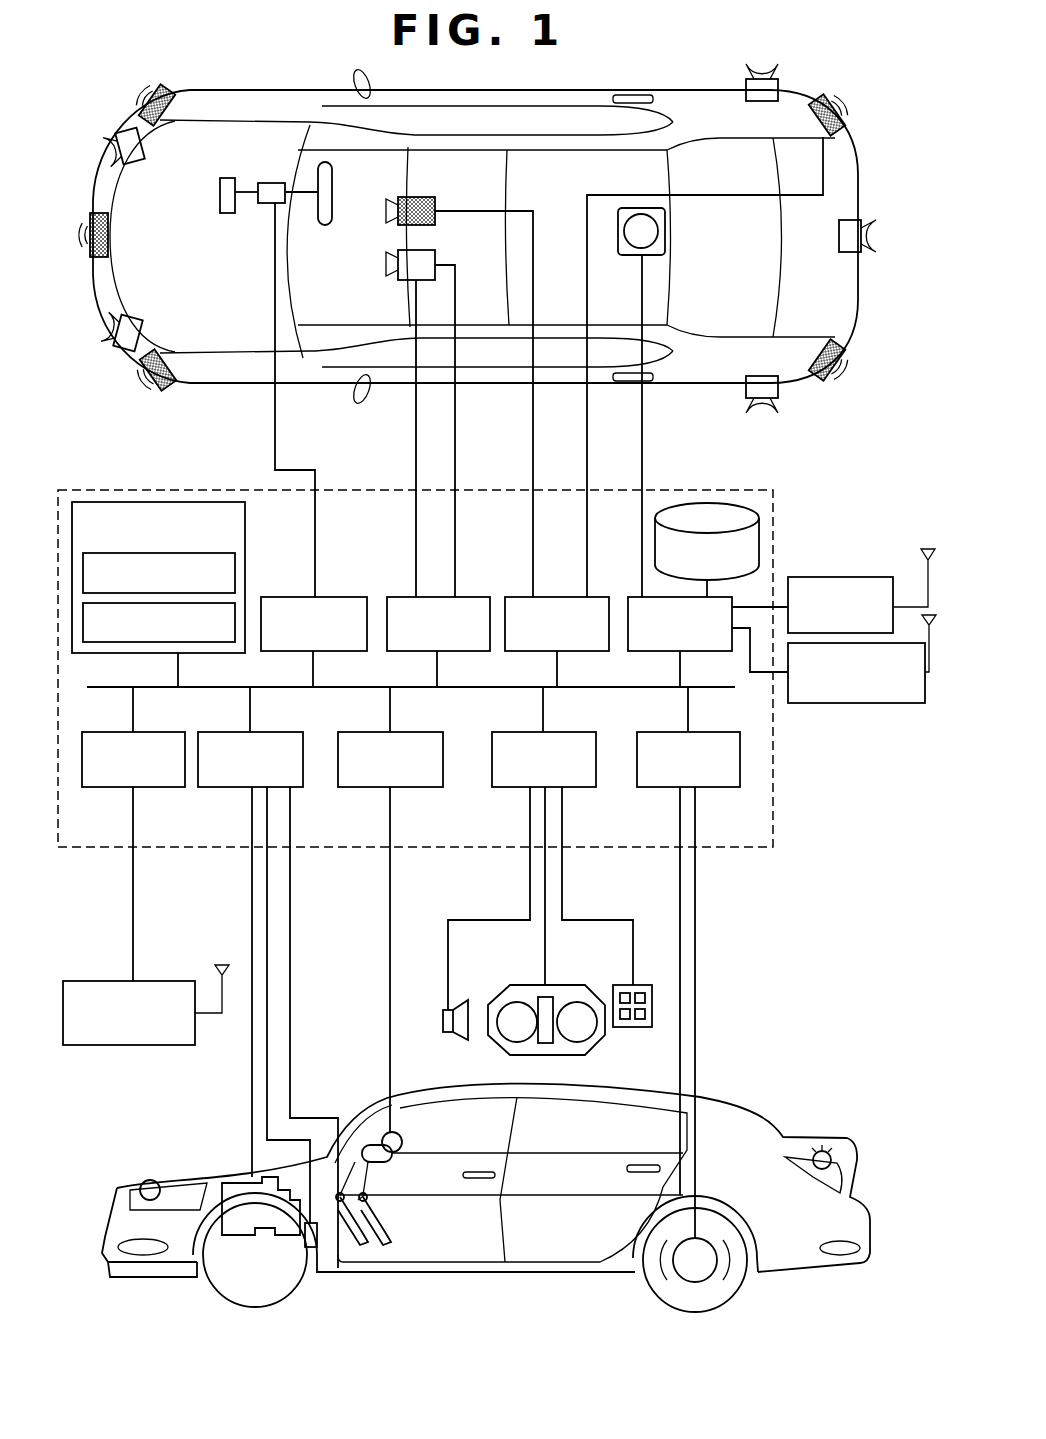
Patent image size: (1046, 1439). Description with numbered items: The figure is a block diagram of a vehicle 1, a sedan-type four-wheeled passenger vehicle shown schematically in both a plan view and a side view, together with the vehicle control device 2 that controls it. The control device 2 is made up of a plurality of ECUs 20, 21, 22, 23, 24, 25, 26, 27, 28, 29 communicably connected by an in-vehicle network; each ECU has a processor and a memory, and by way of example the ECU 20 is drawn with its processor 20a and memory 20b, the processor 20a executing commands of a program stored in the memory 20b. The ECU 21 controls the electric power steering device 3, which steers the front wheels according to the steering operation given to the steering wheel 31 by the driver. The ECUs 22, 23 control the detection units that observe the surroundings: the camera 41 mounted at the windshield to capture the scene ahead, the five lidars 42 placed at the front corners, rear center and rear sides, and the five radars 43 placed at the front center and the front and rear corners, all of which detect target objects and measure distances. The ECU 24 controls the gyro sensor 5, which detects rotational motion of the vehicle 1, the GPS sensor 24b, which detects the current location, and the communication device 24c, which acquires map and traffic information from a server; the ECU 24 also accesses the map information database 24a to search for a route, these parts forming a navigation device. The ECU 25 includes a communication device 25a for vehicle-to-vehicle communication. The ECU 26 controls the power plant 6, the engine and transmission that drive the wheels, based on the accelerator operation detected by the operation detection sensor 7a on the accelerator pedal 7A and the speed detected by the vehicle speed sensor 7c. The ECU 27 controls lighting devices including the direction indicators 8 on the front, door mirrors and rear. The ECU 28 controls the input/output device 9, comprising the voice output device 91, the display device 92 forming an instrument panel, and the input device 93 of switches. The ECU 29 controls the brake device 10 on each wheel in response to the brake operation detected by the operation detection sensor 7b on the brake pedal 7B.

The vehicle 1 is at (872, 150).
The vehicle control device 2 is at (773, 850).
The electric power steering device 3 is at (228, 215).
The steering wheel 31 is at (325, 226).
The gyro sensor 5 is at (666, 232).
The power plant 6 is at (222, 1180).
The operation detection sensor 7a is at (352, 1147).
The operation detection sensor 7b is at (368, 1193).
The accelerator pedal 7A is at (367, 1243).
The brake pedal 7B is at (387, 1226).
The vehicle speed sensor 7c is at (317, 1248).
The direction indicator 8 is at (142, 1183).
The input/output device 9 is at (536, 1030).
The brake device 10 is at (700, 1282).
The ECU 20 is at (100, 502).
The processor 20a is at (235, 553).
The memory 20b is at (235, 603).
The ECU 21 is at (350, 597).
The ECU 22 is at (442, 597).
The ECU 23 is at (566, 597).
The ECU 24 is at (628, 597).
The map information database 24a is at (703, 503).
The GPS sensor 24b is at (860, 577).
The communication device 24c is at (862, 703).
The ECU 25 is at (162, 788).
The communication device 25a is at (132, 1046).
The ECU 26 is at (235, 788).
The ECU 27 is at (420, 788).
The ECU 28 is at (585, 788).
The ECU 29 is at (715, 788).
The camera 41 is at (436, 205).
The lidar 42 is at (138, 165).
The millimeter-wave radar 43 is at (170, 95).
The voice output device 91 is at (441, 1018).
The display device 92 is at (502, 998).
The input device 93 is at (633, 1028).